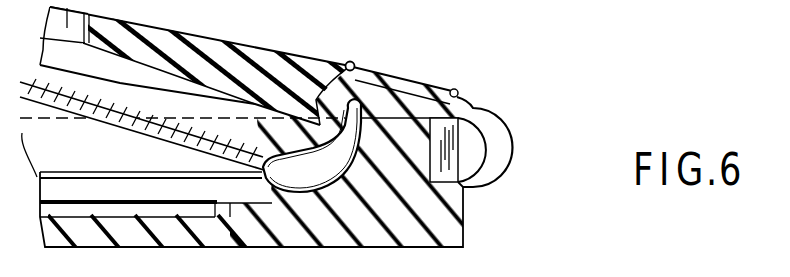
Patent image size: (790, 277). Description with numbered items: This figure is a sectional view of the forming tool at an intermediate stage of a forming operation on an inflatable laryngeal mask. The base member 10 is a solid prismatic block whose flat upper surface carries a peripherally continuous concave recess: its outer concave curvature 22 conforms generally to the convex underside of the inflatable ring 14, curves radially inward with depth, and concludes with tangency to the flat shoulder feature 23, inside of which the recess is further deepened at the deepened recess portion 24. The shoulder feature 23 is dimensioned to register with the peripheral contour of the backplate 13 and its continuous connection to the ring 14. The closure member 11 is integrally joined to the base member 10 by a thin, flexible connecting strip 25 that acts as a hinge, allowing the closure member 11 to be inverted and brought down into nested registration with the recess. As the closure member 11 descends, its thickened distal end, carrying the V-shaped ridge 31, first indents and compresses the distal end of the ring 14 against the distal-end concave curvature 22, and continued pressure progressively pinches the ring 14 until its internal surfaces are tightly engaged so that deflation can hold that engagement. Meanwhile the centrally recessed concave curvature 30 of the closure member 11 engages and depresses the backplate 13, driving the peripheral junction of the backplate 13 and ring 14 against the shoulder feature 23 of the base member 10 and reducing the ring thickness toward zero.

The base member 10 is at (443, 218).
The closure member 11 is at (316, 66).
The backplate 13 is at (125, 137).
The inflatable ring 14 is at (337, 157).
The outer concave curvature 22 is at (328, 173).
The shoulder feature 23 is at (165, 199).
The deepened recess portion 24 is at (118, 227).
The connecting strip 25 is at (508, 157).
The concave curvature 30 is at (104, 72).
The V-shaped ridge 31 is at (349, 65).